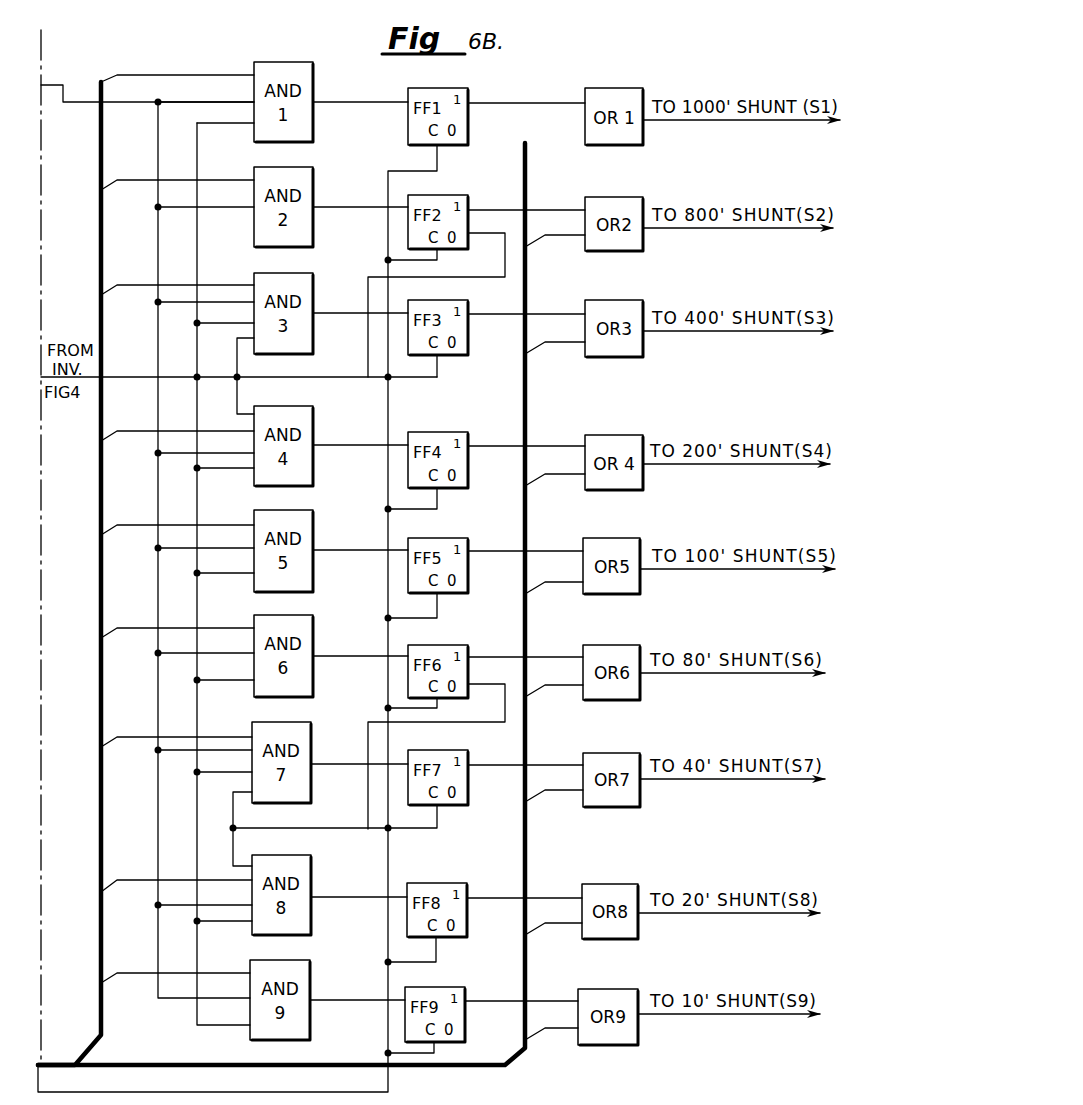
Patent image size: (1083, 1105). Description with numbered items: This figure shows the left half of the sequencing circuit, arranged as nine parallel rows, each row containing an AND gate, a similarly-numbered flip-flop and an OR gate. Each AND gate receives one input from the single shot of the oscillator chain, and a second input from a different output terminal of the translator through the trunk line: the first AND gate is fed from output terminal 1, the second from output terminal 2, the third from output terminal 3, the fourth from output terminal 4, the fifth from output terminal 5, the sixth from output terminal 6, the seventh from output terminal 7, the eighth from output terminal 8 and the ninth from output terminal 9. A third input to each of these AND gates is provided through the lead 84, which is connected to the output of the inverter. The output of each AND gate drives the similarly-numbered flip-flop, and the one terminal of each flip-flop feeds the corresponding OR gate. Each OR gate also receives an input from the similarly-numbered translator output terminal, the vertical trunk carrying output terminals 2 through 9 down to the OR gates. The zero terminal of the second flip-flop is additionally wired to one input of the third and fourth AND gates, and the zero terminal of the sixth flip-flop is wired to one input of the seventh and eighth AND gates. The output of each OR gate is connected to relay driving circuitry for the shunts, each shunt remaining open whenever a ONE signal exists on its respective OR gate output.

The translator output terminal 1 is at (177, 68).
The translator output terminal 2 is at (343, 204).
The translator output terminal 3 is at (343, 311).
The translator output terminal 4 is at (343, 443).
The translator output terminal 5 is at (342, 549).
The translator output terminal 6 is at (342, 654).
The translator output terminal 7 is at (342, 760).
The translator output terminal 8 is at (341, 890).
The translator output terminal 9 is at (339, 996).
The lead 84 is at (125, 374).